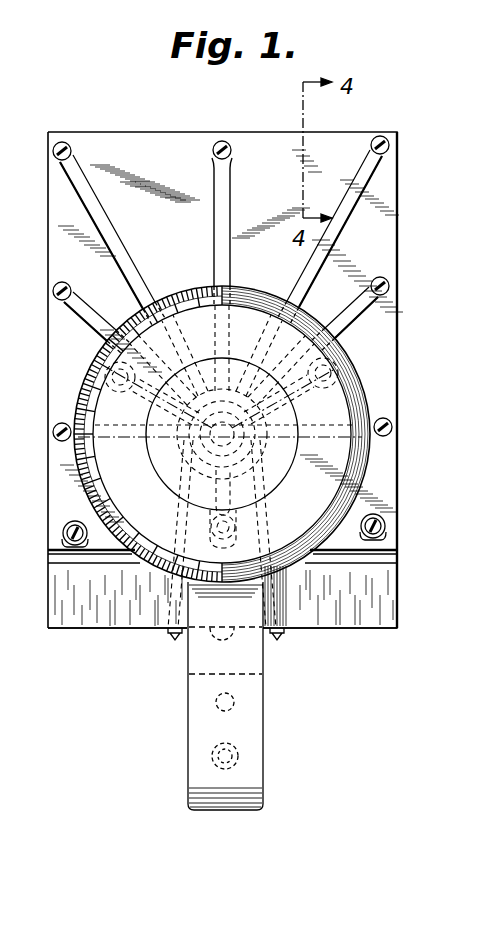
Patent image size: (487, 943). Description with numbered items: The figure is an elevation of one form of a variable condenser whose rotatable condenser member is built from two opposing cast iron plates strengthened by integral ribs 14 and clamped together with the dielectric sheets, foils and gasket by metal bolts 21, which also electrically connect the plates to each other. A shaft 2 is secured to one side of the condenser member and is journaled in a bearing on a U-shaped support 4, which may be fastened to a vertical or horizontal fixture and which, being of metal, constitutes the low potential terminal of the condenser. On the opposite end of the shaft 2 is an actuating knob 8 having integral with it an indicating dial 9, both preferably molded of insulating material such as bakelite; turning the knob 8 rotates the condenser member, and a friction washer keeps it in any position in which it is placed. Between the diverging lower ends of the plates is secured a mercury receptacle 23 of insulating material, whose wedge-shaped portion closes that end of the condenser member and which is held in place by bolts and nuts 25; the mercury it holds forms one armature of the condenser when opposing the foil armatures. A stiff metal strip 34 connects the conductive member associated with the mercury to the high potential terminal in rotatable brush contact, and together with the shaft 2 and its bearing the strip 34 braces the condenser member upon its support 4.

The shaft 2 is at (222, 292).
The U-shaped support 4 is at (255, 686).
The actuating knob 8 is at (280, 472).
The indicating dial 9 is at (340, 462).
The integral ribs 14 is at (222, 240).
The metal bolts 21 is at (212, 150).
The mercury receptacle 23 is at (368, 620).
The bolts and nuts 25 is at (63, 532).
The metal strip 34 is at (176, 637).